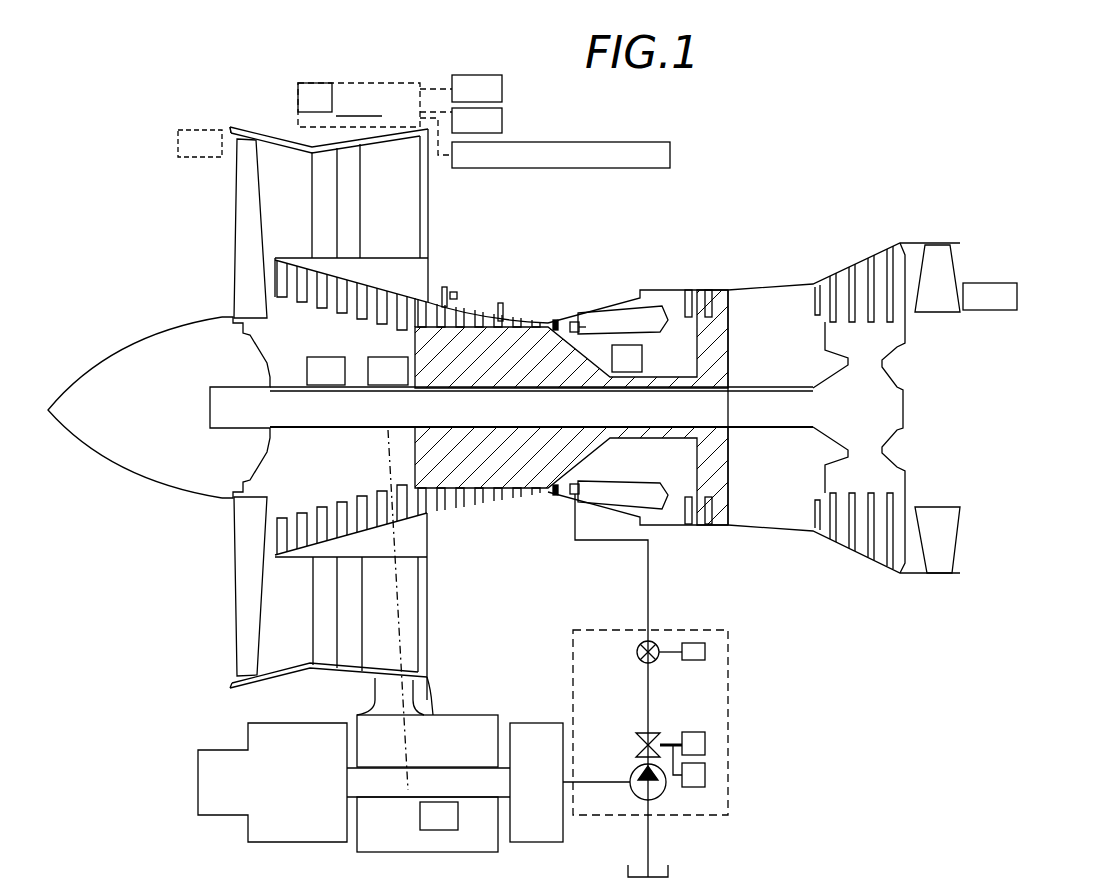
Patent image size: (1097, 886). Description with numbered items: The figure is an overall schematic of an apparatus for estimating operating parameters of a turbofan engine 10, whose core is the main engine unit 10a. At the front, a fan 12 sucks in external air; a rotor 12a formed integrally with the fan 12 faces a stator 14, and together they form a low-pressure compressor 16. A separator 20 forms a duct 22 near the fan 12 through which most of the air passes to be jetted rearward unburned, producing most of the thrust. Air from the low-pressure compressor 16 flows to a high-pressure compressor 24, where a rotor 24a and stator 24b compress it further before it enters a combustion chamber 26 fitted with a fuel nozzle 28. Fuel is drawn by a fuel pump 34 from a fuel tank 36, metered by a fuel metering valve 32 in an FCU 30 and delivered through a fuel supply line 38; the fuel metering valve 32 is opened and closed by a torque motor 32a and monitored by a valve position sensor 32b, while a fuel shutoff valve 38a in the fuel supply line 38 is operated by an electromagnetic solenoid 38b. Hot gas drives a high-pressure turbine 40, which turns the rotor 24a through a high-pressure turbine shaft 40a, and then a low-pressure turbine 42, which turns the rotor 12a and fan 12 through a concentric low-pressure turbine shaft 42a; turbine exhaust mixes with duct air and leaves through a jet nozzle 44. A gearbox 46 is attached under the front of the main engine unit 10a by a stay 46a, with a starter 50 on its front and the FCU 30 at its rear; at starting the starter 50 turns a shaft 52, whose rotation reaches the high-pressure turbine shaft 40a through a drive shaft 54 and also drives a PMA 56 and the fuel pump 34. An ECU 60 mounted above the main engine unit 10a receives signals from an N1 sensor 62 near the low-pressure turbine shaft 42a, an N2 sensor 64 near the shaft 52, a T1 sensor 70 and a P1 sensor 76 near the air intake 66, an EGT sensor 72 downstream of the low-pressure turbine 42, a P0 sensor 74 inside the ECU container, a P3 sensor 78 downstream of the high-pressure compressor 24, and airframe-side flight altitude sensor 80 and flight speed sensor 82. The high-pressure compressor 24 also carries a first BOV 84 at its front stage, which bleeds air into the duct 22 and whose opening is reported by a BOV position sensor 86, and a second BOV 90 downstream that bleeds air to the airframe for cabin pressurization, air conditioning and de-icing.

The turbofan engine 10 is at (546, 240).
The main engine unit 10a is at (444, 584).
The fan 12 is at (231, 512).
The rotor 12a is at (322, 503).
The stator 14 is at (277, 557).
The low-pressure compressor 16 is at (335, 328).
The separator 20 is at (424, 264).
The duct 22 is at (403, 208).
The high-pressure compressor 24 is at (528, 500).
The rotor 24a is at (519, 378).
The stator 24b is at (476, 497).
The combustion chamber 26 is at (592, 316).
The fuel nozzle 28 is at (570, 321).
The fuel control unit 30 is at (573, 675).
The fuel metering valve 32 is at (650, 730).
The torque motor 32a is at (707, 724).
The valve position sensor 32b is at (697, 787).
The fuel pump 34 is at (632, 772).
The fuel tank 36 is at (628, 871).
The fuel supply line 38 is at (645, 678).
The fuel shutoff valve 38a is at (637, 652).
The electromagnetic solenoid 38b is at (695, 660).
The high-pressure turbine 40 is at (731, 338).
The high-pressure turbine shaft 40a is at (385, 440).
The low-pressure turbine 42 is at (835, 348).
The low-pressure turbine shaft 42a is at (528, 425).
The jet nozzle 44 is at (958, 400).
The accessory drive gearbox 46 is at (443, 712).
The stay 46a is at (372, 693).
The integrated starter/generator 50 is at (301, 800).
The shaft 52 is at (382, 800).
The drive shaft 54 is at (408, 742).
The permanent magnet alternator 56 is at (548, 800).
The electronic control unit 60 is at (360, 83).
The N1 sensor 62 is at (307, 370).
The N2 sensor 64 is at (458, 816).
The air intake 66 is at (229, 126).
The T1 sensor 70 is at (194, 128).
The EGT sensor 72 is at (1017, 292).
The P0 sensor 74 is at (298, 97).
The P1 sensor 76 is at (385, 344).
The P3 sensor 78 is at (642, 355).
The flight altitude sensor 80 is at (497, 76).
The flight speed sensor 82 is at (502, 118).
The first bleed off valve 84 is at (445, 287).
The BOV position sensor 86 is at (460, 281).
The second bleed off valve 90 is at (501, 303).